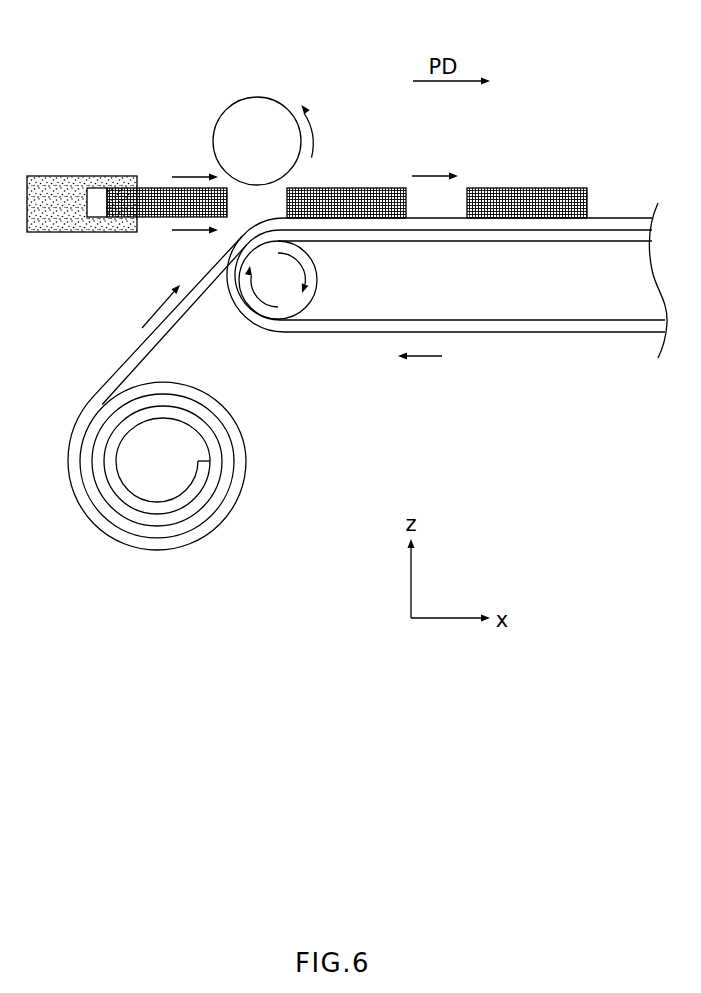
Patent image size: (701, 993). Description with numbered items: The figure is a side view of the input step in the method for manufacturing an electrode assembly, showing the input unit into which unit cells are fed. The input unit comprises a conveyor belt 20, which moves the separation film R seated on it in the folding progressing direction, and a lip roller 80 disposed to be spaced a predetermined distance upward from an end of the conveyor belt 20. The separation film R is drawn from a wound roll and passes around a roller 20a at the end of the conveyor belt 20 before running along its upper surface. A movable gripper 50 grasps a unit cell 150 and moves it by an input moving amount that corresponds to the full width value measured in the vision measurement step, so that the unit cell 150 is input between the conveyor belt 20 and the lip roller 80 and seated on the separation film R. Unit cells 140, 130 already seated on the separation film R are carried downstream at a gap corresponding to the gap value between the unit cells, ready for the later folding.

The conveyor belt 20 is at (491, 365).
The roller 20a is at (249, 337).
The movable gripper 50 is at (93, 160).
The lip roller 80 is at (264, 84).
The unit cell 130 is at (526, 188).
The unit cell 140 is at (366, 188).
The unit cell 150 is at (165, 188).
The separation film R is at (140, 355).